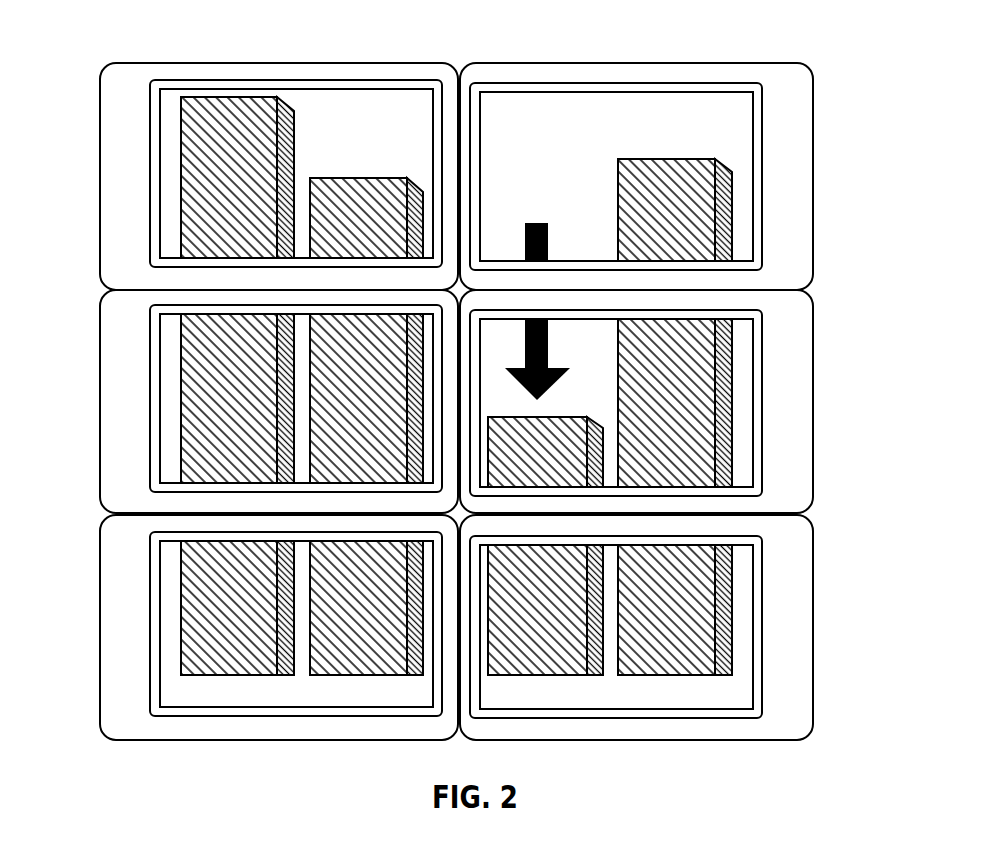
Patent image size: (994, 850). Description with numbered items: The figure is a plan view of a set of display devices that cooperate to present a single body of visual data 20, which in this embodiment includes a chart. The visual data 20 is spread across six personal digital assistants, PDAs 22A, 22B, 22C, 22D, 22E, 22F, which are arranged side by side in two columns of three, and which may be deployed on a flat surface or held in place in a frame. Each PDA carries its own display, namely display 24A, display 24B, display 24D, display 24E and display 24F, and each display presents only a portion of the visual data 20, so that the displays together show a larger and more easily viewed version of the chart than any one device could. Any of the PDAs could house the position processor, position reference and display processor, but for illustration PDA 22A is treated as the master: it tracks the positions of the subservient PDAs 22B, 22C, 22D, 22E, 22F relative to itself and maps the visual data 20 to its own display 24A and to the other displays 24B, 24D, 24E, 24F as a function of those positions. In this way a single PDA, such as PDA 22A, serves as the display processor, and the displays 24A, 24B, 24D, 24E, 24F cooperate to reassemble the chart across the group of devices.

The visual data 20 is at (247, 114).
The PDA 22A is at (100, 176).
The PDA 22B is at (813, 177).
The PDA 22C is at (100, 399).
The PDA 22D is at (813, 400).
The PDA 22E is at (100, 624).
The PDA 22F is at (813, 623).
The display 24A is at (242, 141).
The display 24B is at (754, 235).
The display 24D is at (754, 468).
The display 24E is at (168, 470).
The display 24F is at (754, 685).